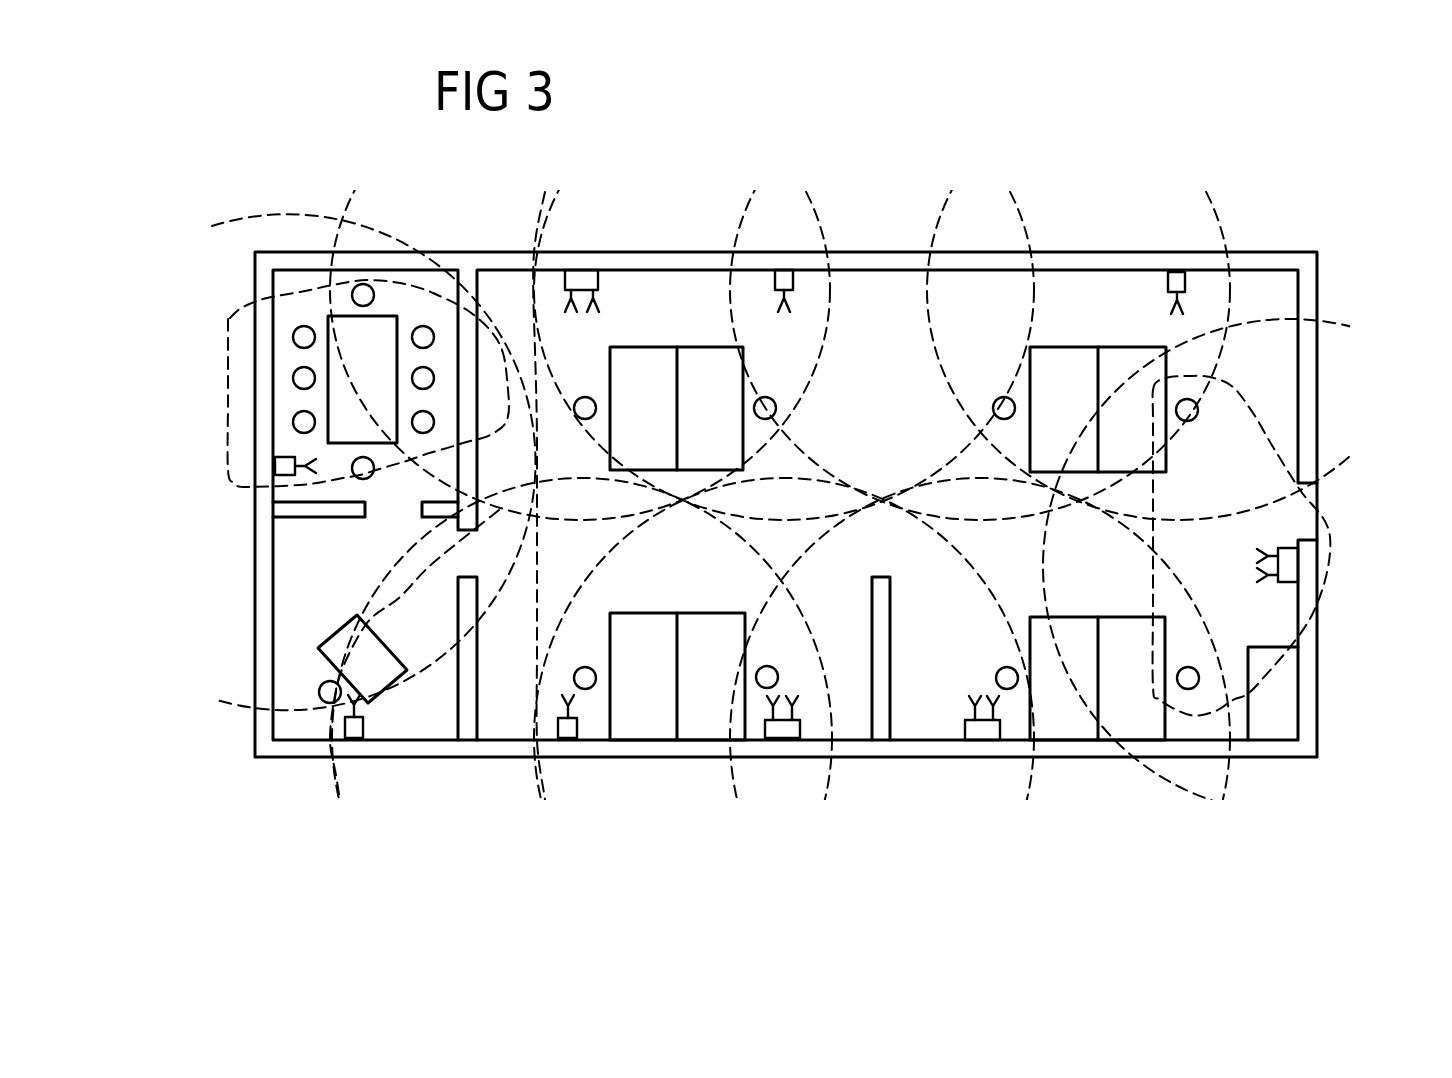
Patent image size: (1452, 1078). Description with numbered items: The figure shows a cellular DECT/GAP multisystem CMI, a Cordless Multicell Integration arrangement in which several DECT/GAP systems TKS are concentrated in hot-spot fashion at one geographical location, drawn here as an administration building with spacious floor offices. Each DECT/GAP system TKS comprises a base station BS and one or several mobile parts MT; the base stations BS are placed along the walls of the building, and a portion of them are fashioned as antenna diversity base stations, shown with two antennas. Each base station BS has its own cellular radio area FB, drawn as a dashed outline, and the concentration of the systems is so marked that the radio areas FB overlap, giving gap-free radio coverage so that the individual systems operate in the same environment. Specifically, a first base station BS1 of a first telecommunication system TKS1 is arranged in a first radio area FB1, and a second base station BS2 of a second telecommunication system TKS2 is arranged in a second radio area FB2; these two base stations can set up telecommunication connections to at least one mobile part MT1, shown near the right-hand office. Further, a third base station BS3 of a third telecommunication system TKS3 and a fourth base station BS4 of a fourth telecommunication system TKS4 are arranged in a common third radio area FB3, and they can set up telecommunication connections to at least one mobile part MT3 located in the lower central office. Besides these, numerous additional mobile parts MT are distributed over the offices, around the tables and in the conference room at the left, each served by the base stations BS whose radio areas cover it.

The cellular DECT/GAP multisystem CMI is at (878, 240).
The base station BS is at (275, 466).
The first base station BS1 is at (1167, 287).
The second base station BS2 is at (1293, 563).
The third base station BS3 is at (983, 738).
The fourth base station BS4 is at (787, 737).
The mobile part MT is at (412, 337).
The mobile part MT1 is at (1187, 421).
The mobile part MT3 is at (775, 668).
The radio area FB is at (824, 194).
The first radio area FB1 is at (1328, 467).
The second radio area FB2 is at (1323, 815).
The third radio area FB3 is at (1217, 817).
The DECT/GAP system TKS is at (228, 371).
The first telecommunication system TKS1 is at (928, 247).
The second telecommunication system TKS2 is at (1275, 313).
The third telecommunication system TKS3 is at (1227, 817).
The fourth telecommunication system TKS4 is at (1037, 770).